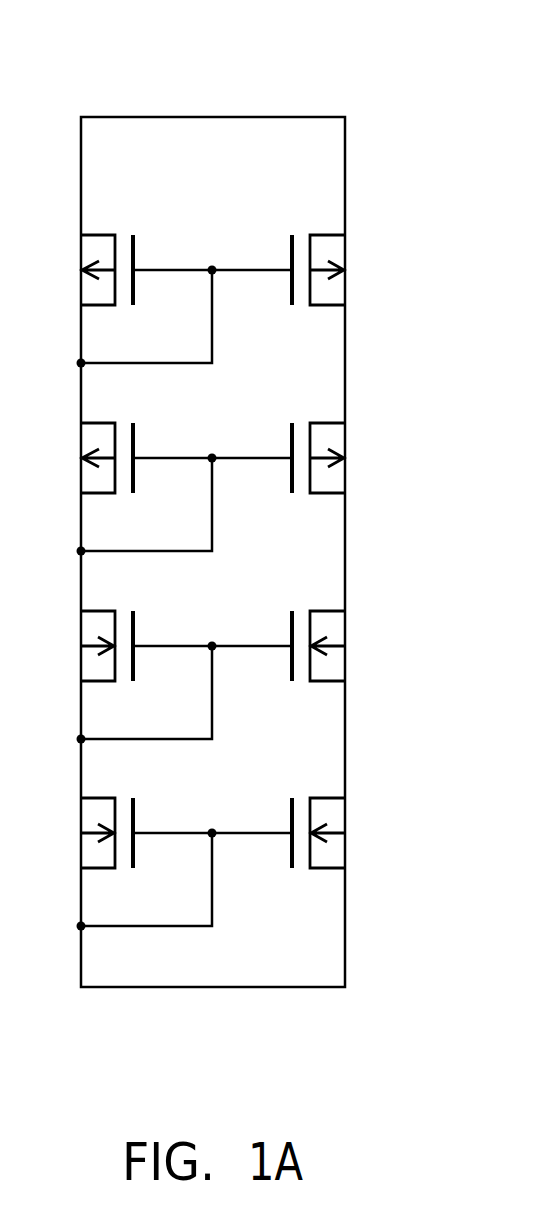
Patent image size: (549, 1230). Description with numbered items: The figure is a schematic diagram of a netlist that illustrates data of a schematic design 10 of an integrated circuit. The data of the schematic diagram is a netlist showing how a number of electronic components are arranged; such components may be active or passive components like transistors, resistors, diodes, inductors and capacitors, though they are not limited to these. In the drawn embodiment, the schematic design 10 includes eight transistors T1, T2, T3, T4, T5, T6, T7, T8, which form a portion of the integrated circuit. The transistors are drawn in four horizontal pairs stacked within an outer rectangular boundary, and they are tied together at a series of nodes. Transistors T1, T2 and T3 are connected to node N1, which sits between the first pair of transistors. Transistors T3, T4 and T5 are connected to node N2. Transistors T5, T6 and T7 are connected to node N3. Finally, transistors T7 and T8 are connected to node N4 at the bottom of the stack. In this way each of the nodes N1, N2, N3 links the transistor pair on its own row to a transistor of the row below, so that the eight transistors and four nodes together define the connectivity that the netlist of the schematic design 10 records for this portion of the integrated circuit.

The schematic design 10 is at (440, 47).
The transistor T1 is at (98, 235).
The transistor T2 is at (327, 235).
The transistor T3 is at (98, 423).
The transistor T4 is at (327, 423).
The transistor T5 is at (98, 611).
The transistor T6 is at (327, 611).
The transistor T7 is at (98, 798).
The transistor T8 is at (327, 798).
The node N1 is at (212, 265).
The node N2 is at (212, 453).
The node N3 is at (212, 641).
The node N4 is at (212, 828).